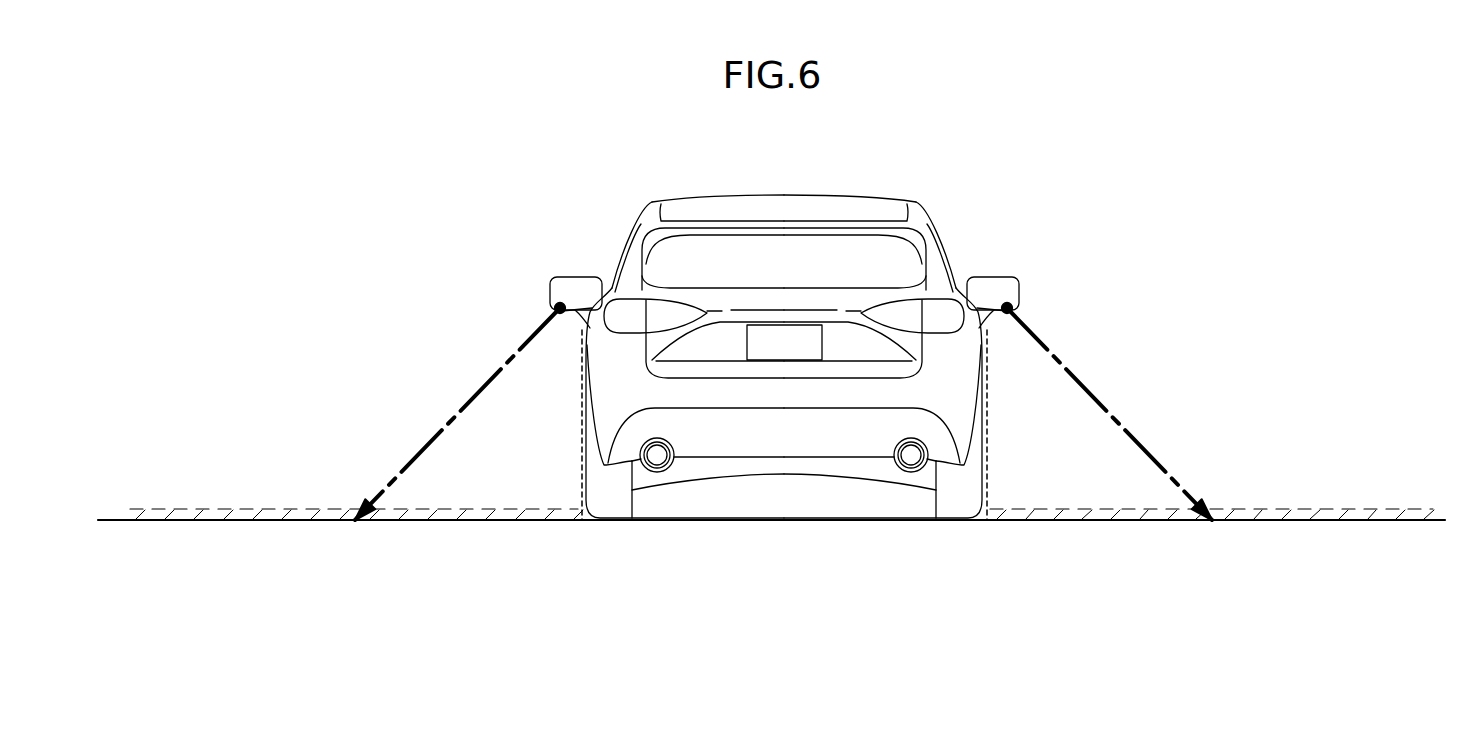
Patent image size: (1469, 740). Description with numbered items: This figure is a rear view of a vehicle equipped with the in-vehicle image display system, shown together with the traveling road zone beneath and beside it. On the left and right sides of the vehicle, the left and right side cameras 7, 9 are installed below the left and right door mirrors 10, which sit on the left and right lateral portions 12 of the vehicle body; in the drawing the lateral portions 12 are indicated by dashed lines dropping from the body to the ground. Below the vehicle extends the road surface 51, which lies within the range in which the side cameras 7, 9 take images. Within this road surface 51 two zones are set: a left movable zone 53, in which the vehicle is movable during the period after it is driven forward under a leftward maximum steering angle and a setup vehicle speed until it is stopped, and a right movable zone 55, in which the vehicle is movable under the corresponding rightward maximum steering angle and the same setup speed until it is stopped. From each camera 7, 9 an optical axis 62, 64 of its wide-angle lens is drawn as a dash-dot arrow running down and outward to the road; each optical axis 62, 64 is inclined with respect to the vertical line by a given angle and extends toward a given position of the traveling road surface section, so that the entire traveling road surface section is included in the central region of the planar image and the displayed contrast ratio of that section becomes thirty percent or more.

The left side camera 7 is at (557, 305).
The right side camera 9 is at (1010, 305).
The door mirror 10 is at (553, 283).
The lateral portion 12 is at (582, 370).
The road surface 51 is at (388, 523).
The left movable zone 53 is at (478, 536).
The right movable zone 55 is at (1082, 536).
The optical axis 62 is at (424, 443).
The optical axis 64 is at (1143, 443).